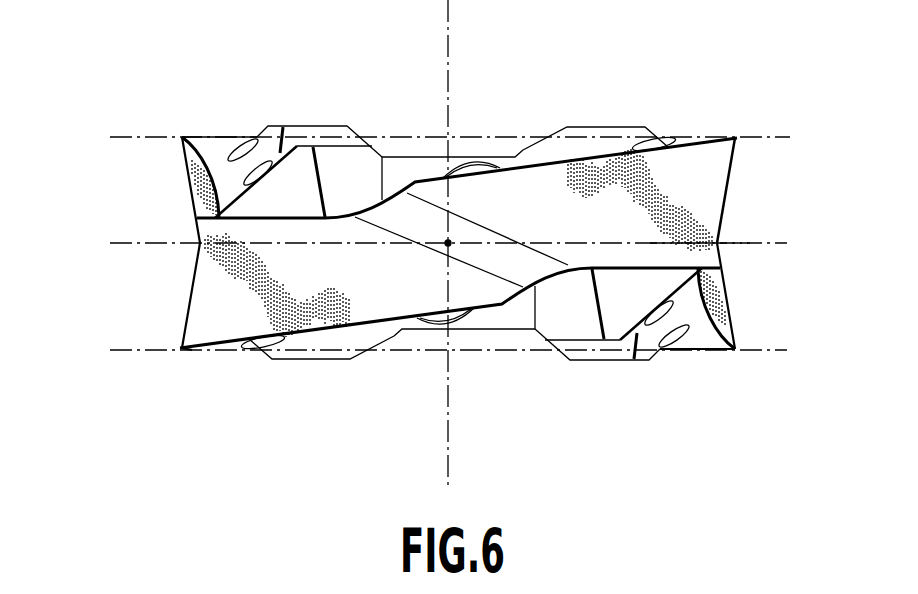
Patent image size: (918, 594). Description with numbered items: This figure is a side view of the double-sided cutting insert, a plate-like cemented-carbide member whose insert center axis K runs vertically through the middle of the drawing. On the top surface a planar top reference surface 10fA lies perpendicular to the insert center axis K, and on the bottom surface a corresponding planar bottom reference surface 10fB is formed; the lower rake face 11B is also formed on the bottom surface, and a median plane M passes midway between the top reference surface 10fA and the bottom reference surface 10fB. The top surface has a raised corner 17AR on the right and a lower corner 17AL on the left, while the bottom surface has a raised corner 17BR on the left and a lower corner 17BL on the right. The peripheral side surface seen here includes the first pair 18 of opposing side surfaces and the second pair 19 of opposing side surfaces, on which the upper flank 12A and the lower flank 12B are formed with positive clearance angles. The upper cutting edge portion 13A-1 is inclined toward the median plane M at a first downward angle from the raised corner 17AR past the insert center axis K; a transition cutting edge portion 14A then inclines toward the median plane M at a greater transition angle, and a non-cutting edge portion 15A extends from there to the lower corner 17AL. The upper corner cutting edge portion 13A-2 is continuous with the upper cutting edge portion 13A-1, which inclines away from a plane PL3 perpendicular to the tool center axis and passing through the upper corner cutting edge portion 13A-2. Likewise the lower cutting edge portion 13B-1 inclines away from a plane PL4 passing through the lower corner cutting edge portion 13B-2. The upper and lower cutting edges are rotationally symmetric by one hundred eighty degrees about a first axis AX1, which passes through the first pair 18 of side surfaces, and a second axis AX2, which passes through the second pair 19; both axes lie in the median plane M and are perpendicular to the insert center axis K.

The top reference surface 10fA is at (317, 127).
The bottom reference surface 10fB is at (295, 360).
The lower rake face 11B is at (340, 332).
The upper flank 12A is at (200, 203).
The lower flank 12B is at (203, 315).
The upper cutting edge portion 13A-1 is at (226, 145).
The upper corner cutting edge portion 13A-2 is at (182, 137).
The lower cutting edge portion 13B-1 is at (227, 347).
The lower corner cutting edge portion 13B-2 is at (180, 350).
The transition cutting edge portion 14A is at (387, 198).
The non-cutting edge portion 15A is at (250, 213).
The lower corner of the top surface 17AL is at (197, 218).
The raised corner of the top surface 17AR is at (738, 137).
The lower corner of the bottom surface 17BL is at (708, 267).
The raised corner of the bottom surface 17BR is at (182, 345).
The first pair of opposing side surfaces 18 is at (197, 255).
The second pair of opposing side surfaces 19 is at (387, 277).
The first axis AX1 is at (745, 243).
The second axis AX2 is at (448, 243).
The insert center axis K is at (448, 67).
The median plane M is at (460, 248).
The plane PL3 is at (778, 137).
The plane PL4 is at (755, 348).